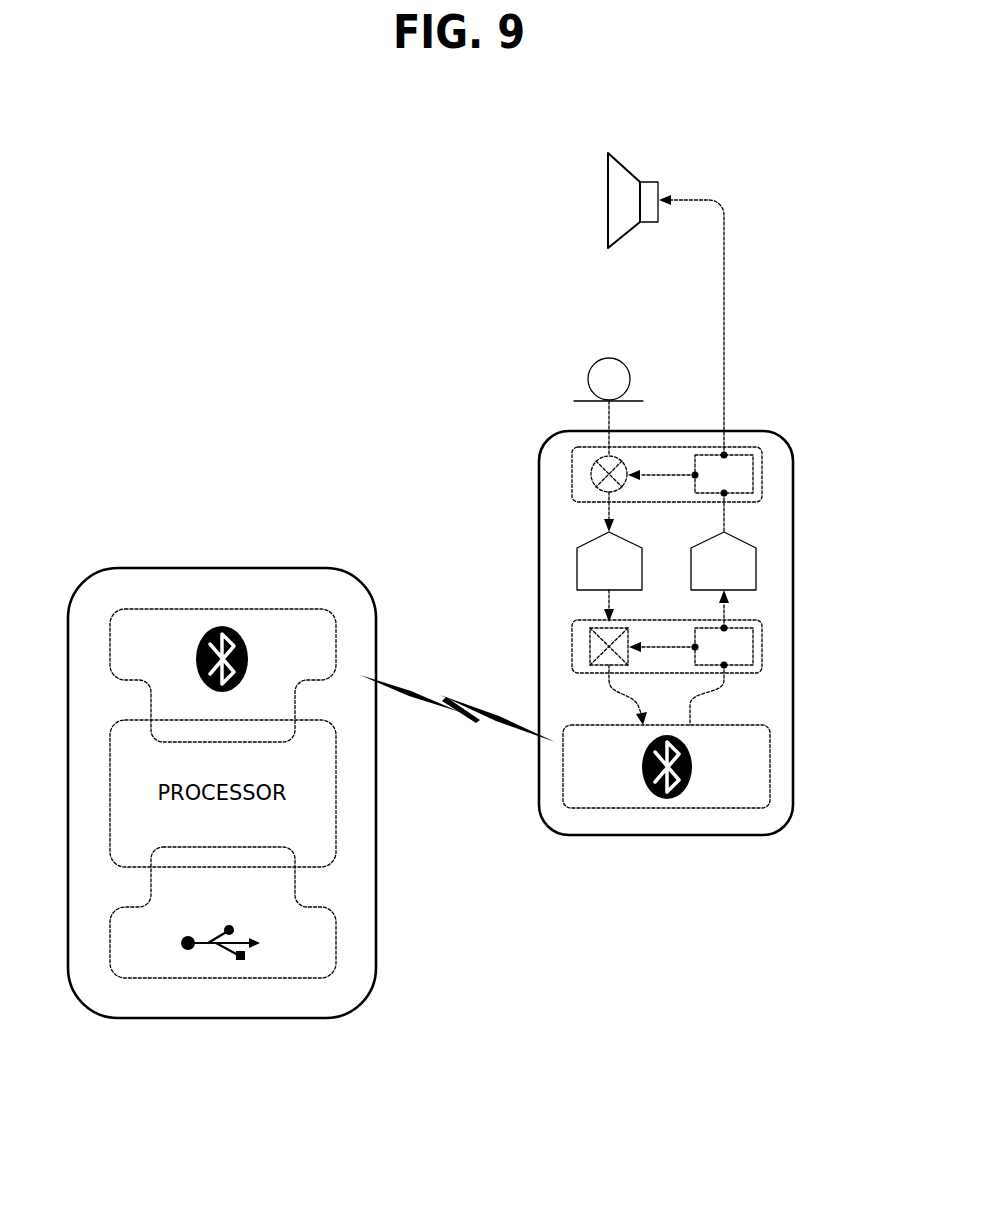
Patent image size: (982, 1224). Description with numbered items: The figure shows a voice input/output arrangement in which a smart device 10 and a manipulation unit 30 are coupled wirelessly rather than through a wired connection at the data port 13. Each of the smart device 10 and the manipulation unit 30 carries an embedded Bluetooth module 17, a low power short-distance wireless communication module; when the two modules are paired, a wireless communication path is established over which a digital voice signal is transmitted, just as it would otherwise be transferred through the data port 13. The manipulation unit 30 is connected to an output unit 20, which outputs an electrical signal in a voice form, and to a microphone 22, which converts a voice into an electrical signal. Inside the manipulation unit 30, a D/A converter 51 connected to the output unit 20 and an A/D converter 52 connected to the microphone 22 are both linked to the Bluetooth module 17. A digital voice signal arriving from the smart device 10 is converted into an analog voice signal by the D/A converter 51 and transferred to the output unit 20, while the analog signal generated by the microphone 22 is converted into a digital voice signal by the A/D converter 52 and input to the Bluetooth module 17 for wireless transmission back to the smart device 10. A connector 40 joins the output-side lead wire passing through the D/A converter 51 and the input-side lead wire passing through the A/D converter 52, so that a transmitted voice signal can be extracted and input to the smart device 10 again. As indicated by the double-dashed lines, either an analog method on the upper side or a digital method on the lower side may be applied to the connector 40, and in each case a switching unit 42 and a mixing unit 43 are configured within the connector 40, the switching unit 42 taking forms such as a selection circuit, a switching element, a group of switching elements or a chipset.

The smart device 10 is at (220, 585).
The data port 13 is at (167, 960).
The Bluetooth module 17 is at (315, 625).
The output unit 20 is at (608, 218).
The microphone 22 is at (600, 370).
The manipulation unit 30 is at (762, 432).
The connector 40 is at (573, 475).
The switching unit 42 is at (758, 472).
The mixing unit 43 is at (596, 484).
The D/A converter 51 is at (758, 567).
The A/D converter 52 is at (577, 566).